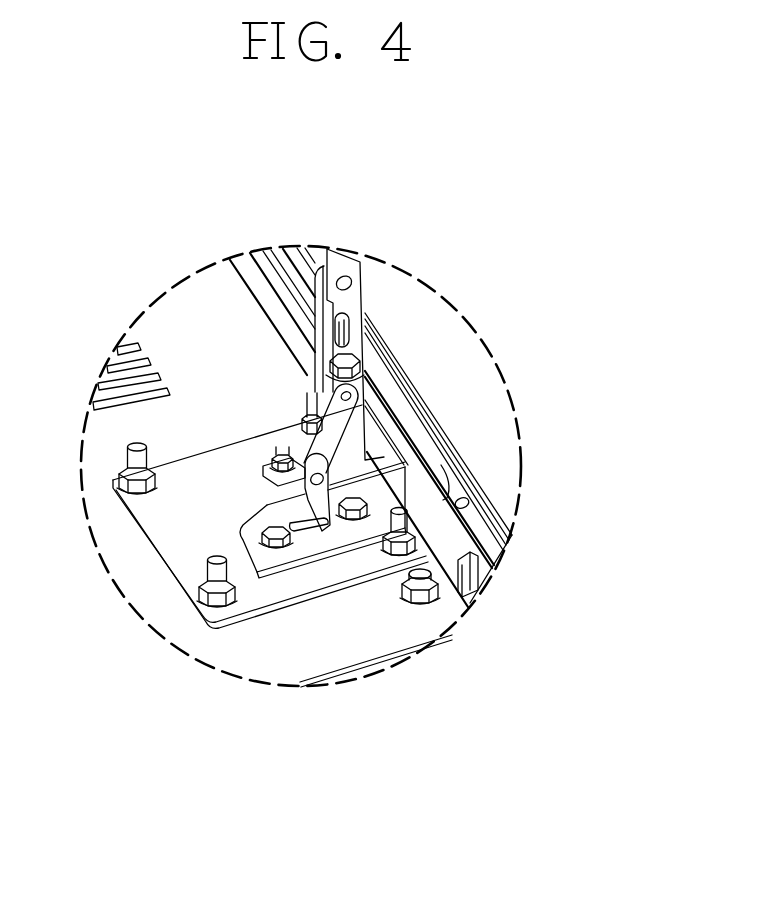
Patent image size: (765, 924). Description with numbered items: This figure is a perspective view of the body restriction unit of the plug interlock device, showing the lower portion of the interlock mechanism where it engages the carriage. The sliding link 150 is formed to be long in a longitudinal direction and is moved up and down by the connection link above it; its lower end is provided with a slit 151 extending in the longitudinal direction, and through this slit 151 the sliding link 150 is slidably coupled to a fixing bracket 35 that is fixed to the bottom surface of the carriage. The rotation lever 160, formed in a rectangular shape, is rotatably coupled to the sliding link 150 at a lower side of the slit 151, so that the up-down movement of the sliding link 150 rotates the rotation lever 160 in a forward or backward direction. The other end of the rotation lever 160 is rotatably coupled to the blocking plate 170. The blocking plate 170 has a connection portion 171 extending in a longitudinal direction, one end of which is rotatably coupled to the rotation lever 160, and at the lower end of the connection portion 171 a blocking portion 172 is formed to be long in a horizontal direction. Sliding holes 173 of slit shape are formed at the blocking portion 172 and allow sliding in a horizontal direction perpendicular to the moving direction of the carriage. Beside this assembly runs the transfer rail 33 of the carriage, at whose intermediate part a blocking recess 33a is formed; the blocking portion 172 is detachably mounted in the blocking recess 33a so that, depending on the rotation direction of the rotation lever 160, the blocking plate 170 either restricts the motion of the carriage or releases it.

The sliding link 150 is at (413, 323).
The slit 151 is at (343, 326).
The rotation lever 160 is at (300, 425).
The fixing bracket 35 is at (355, 445).
The transfer rail 33 is at (467, 483).
The blocking recess 33a is at (425, 528).
The blocking plate 170 is at (323, 618).
The connection portion 171 is at (323, 530).
The blocking portion 172 is at (362, 525).
The sliding holes 173 is at (270, 504).